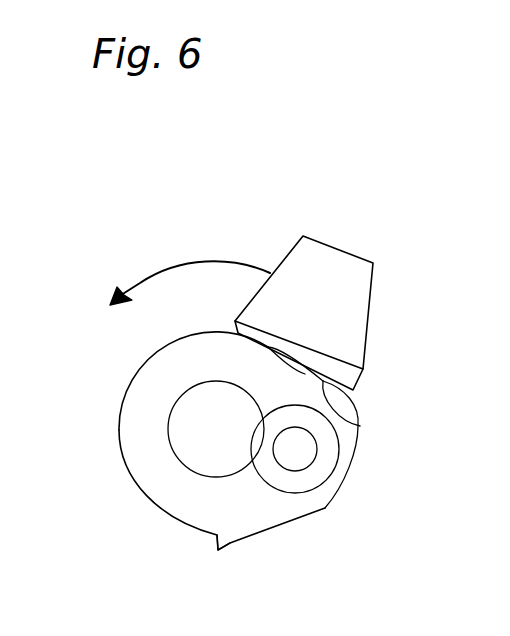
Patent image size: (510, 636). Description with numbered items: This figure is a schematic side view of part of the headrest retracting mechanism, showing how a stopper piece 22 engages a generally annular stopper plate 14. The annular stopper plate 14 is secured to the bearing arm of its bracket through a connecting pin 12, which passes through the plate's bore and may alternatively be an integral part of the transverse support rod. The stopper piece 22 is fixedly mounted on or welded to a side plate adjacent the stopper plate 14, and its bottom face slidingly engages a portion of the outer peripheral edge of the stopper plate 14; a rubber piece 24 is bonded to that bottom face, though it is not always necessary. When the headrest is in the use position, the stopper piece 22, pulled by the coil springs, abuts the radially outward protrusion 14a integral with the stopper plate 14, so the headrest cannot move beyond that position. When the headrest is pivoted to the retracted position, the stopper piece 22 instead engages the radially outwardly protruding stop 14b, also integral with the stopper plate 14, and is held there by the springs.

The connecting pin 12 is at (323, 465).
The annular stopper plate 14 is at (130, 428).
The radially outward protrusion 14a is at (355, 420).
The radially outwardly protruding stop 14b is at (228, 543).
The stopper piece 22 is at (355, 313).
The rubber piece 24 is at (350, 377).